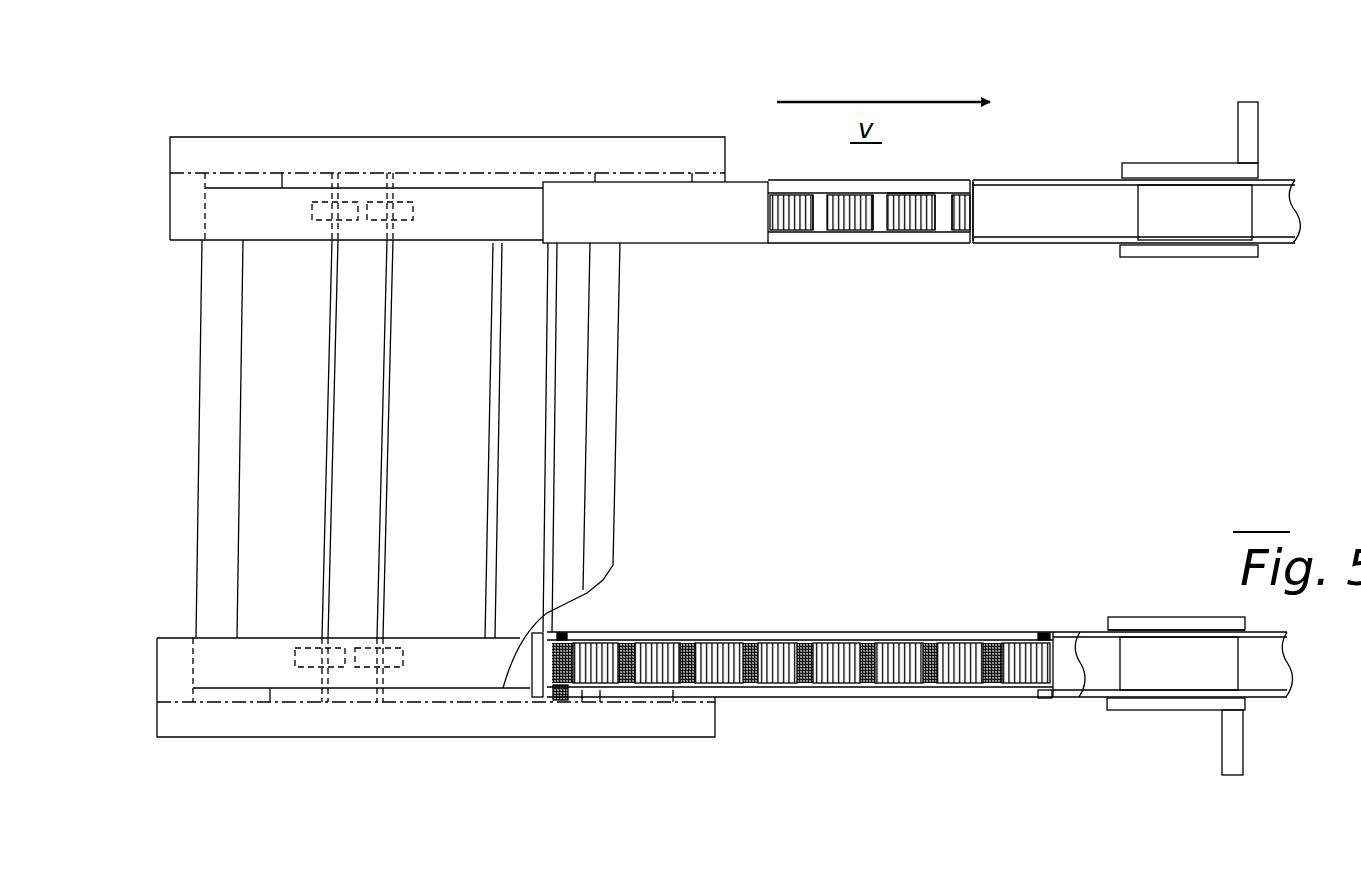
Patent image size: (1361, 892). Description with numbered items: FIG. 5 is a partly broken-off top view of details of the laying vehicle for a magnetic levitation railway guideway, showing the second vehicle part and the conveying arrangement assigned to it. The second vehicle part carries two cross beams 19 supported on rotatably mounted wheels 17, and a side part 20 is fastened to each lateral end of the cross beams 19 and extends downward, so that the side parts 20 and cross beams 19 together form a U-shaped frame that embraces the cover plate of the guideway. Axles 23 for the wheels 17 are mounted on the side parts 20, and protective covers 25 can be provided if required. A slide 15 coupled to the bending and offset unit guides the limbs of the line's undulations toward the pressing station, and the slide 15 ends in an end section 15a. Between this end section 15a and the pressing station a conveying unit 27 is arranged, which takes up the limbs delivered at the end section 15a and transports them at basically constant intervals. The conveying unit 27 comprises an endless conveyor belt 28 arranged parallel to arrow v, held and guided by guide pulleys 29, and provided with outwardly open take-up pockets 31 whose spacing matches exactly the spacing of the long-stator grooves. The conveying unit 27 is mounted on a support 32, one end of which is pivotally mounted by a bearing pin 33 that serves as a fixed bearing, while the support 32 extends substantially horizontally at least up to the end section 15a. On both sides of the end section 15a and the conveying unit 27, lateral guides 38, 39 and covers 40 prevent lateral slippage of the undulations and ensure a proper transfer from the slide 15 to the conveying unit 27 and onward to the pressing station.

The slide 15 is at (1070, 175).
The end section 15a is at (980, 222).
The wheels 17 is at (377, 205).
The cross beams 19 is at (600, 473).
The side part 20 is at (205, 150).
The axles 23 is at (388, 322).
The protective covers 25 is at (170, 190).
The conveying unit 27 is at (803, 280).
The conveyor belt 28 is at (912, 212).
The guide pulleys 29 is at (1042, 698).
The take-up pockets 31 is at (941, 212).
The support 32 is at (867, 633).
The bearing pin 33 is at (560, 700).
The lateral guide 38 is at (905, 187).
The lateral guide 39 is at (880, 233).
The covers 40 is at (658, 227).